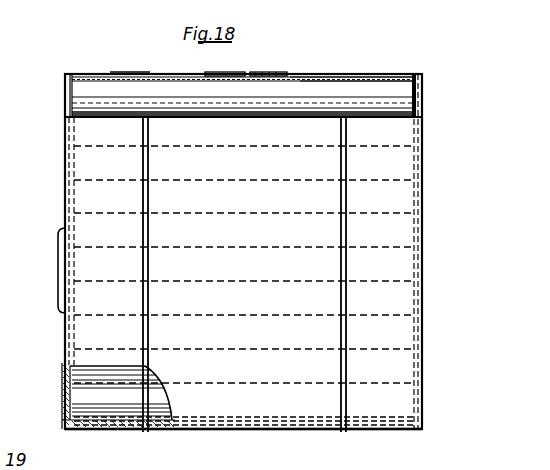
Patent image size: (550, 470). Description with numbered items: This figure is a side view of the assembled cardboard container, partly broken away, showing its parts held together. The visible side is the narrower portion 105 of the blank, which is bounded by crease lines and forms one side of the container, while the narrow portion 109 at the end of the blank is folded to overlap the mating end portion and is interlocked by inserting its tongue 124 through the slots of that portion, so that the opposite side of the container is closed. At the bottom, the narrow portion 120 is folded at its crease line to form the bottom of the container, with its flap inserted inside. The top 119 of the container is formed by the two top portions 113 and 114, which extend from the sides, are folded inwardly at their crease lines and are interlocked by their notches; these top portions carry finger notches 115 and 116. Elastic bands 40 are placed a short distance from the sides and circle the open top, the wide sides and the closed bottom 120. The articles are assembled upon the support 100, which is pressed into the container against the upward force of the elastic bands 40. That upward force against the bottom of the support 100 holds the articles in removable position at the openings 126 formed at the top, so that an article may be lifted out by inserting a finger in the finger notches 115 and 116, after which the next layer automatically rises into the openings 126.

The narrower portion 105 is at (420, 266).
The openings 126 is at (78, 98).
The finger notch 115 is at (140, 73).
The top portion 114 is at (225, 72).
The top portion 113 is at (277, 73).
The top 119 is at (305, 77).
The finger notch 116 is at (346, 79).
The elastic bands 40 is at (143, 165).
The narrow portion 109 is at (66, 206).
The tongue 124 is at (62, 267).
The support 100 is at (105, 418).
The bottom 120 is at (245, 429).